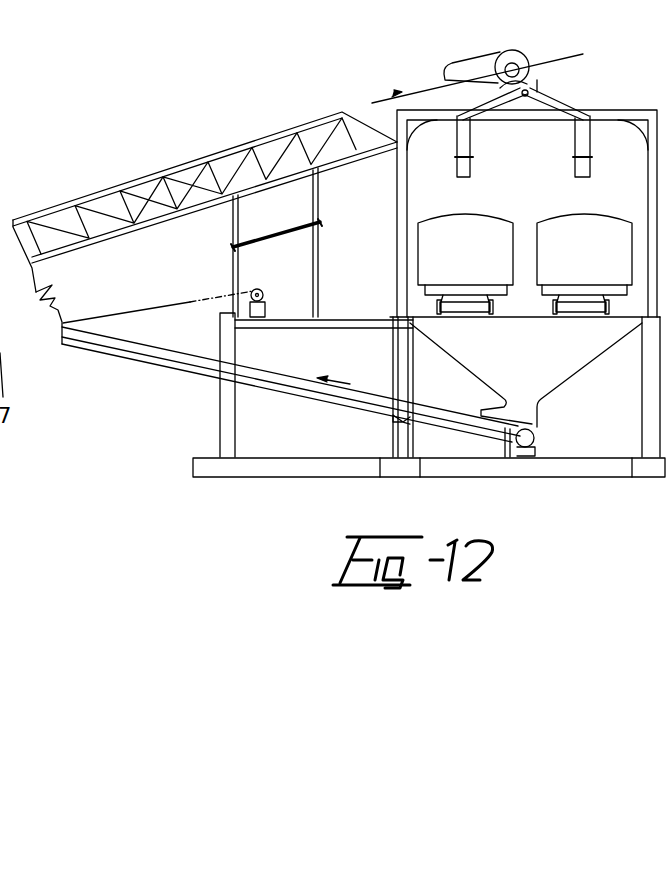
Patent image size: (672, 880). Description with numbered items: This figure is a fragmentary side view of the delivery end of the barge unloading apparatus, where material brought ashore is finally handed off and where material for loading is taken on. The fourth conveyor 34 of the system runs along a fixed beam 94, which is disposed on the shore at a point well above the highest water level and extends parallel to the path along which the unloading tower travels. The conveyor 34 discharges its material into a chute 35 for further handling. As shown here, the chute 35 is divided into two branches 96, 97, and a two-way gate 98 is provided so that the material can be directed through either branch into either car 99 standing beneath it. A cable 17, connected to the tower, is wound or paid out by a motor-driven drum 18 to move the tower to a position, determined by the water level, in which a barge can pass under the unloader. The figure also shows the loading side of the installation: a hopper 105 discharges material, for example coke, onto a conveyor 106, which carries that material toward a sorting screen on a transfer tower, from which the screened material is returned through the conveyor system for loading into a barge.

The fourth conveyor 34 is at (215, 152).
The fixed beam 94 is at (93, 190).
The cable 17 is at (147, 307).
The motor-driven drum 18 is at (265, 303).
The conveyor 106 is at (187, 365).
The chute 35 is at (528, 68).
The two-way gate 98 is at (533, 92).
The branch 96 is at (473, 150).
The branch 97 is at (577, 150).
The car 99 is at (542, 222).
The hopper 105 is at (585, 368).